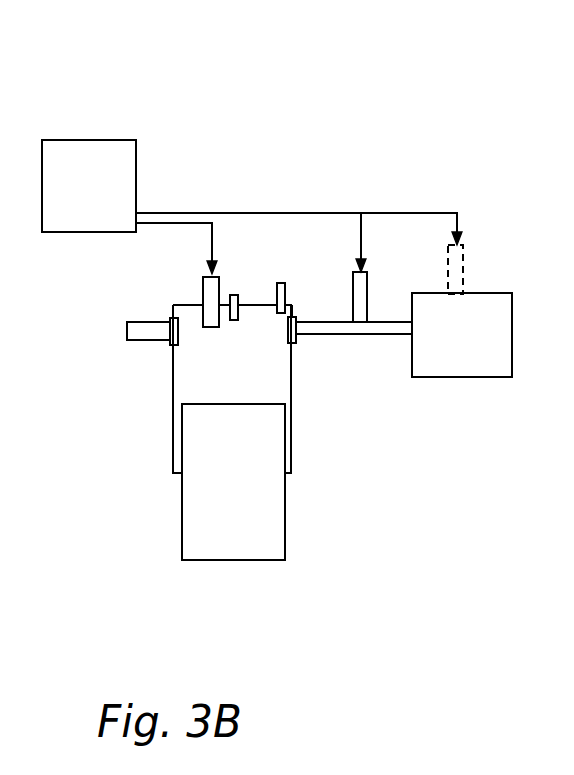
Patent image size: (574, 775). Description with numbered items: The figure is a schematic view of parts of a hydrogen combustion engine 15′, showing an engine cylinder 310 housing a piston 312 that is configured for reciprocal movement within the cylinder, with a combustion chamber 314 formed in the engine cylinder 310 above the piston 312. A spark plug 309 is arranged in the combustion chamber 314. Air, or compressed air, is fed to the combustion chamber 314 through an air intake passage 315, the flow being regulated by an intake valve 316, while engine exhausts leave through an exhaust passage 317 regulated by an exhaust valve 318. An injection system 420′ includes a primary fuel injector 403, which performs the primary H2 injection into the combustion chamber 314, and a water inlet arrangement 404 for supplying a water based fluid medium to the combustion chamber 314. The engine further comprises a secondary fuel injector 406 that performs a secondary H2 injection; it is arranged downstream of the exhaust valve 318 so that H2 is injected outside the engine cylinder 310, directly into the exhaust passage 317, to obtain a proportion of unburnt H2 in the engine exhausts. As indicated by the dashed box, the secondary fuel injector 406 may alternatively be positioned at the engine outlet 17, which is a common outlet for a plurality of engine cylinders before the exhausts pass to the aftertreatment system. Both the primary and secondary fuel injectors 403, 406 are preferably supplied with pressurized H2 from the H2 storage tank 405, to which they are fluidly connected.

The hydrogen combustion engine 15′ is at (197, 113).
The injection system 420′ is at (328, 190).
The H2 storage tank 405 is at (45, 236).
The primary fuel injector 403 is at (220, 292).
The spark plug 309 is at (236, 295).
The water inlet arrangement 404 is at (285, 300).
The combustion chamber 314 is at (210, 367).
The engine cylinder 310 is at (172, 460).
The piston 312 is at (183, 563).
The intake valve 316 is at (172, 318).
The air intake passage 315 is at (142, 342).
The exhaust valve 318 is at (294, 345).
The exhaust passage 317 is at (347, 337).
The secondary fuel injector 406 is at (368, 277).
The engine outlet 17 is at (468, 378).